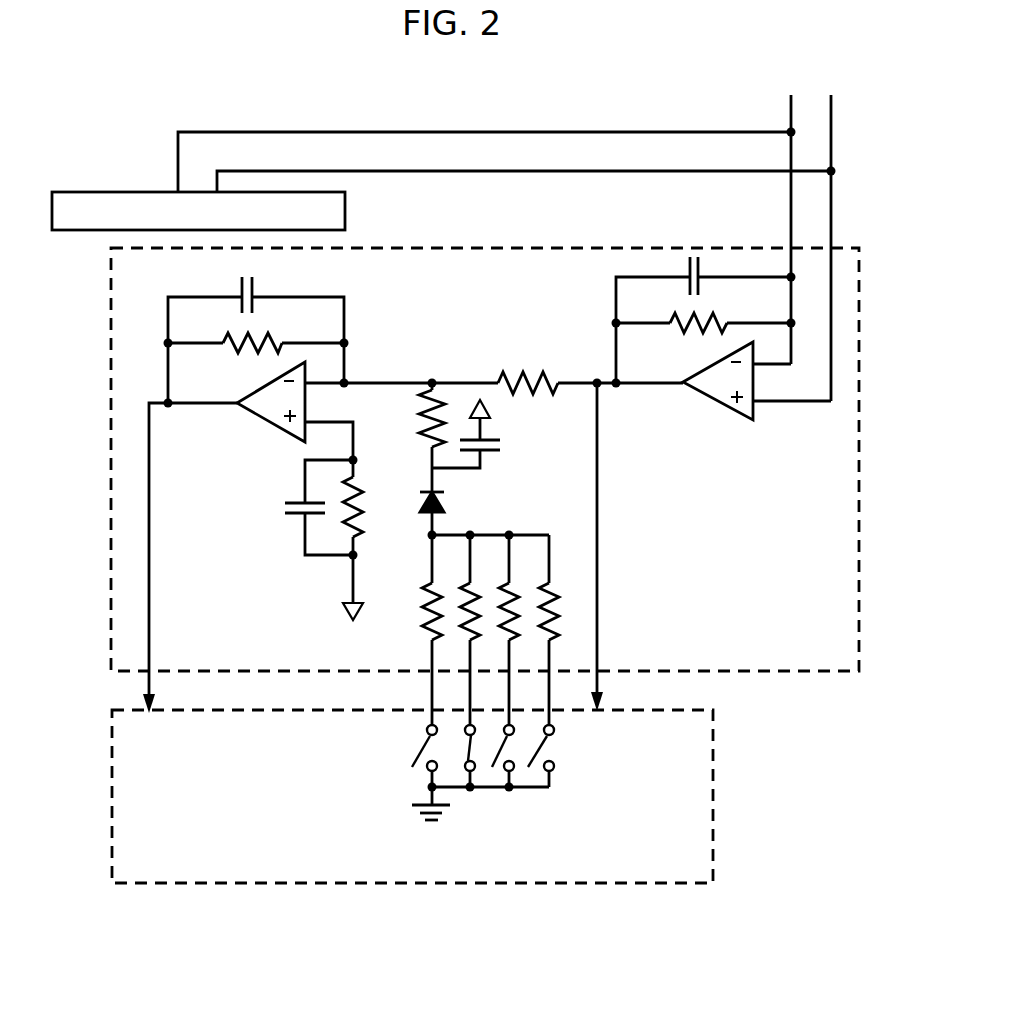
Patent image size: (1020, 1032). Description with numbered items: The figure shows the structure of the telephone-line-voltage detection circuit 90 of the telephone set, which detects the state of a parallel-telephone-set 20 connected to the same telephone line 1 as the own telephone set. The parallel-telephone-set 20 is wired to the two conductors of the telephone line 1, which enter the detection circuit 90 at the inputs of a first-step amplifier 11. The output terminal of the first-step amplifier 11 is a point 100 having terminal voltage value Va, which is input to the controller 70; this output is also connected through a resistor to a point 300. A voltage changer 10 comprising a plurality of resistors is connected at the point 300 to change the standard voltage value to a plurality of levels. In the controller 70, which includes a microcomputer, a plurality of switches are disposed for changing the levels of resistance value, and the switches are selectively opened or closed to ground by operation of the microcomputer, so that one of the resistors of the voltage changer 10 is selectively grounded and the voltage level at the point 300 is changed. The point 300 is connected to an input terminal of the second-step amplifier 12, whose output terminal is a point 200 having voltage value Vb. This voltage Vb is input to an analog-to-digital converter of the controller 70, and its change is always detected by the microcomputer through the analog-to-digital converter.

The telephone line 1 is at (805, 94).
The parallel-telephone-set 20 is at (147, 191).
The telephone-line-voltage detection circuit 90 is at (859, 418).
The second-step amplifier 12 is at (265, 422).
The first-step amplifier 11 is at (753, 412).
The point 300 is at (432, 380).
The point 100 is at (597, 450).
The point 200 is at (149, 468).
The voltage changer 10 is at (417, 612).
The controller 70 is at (713, 777).